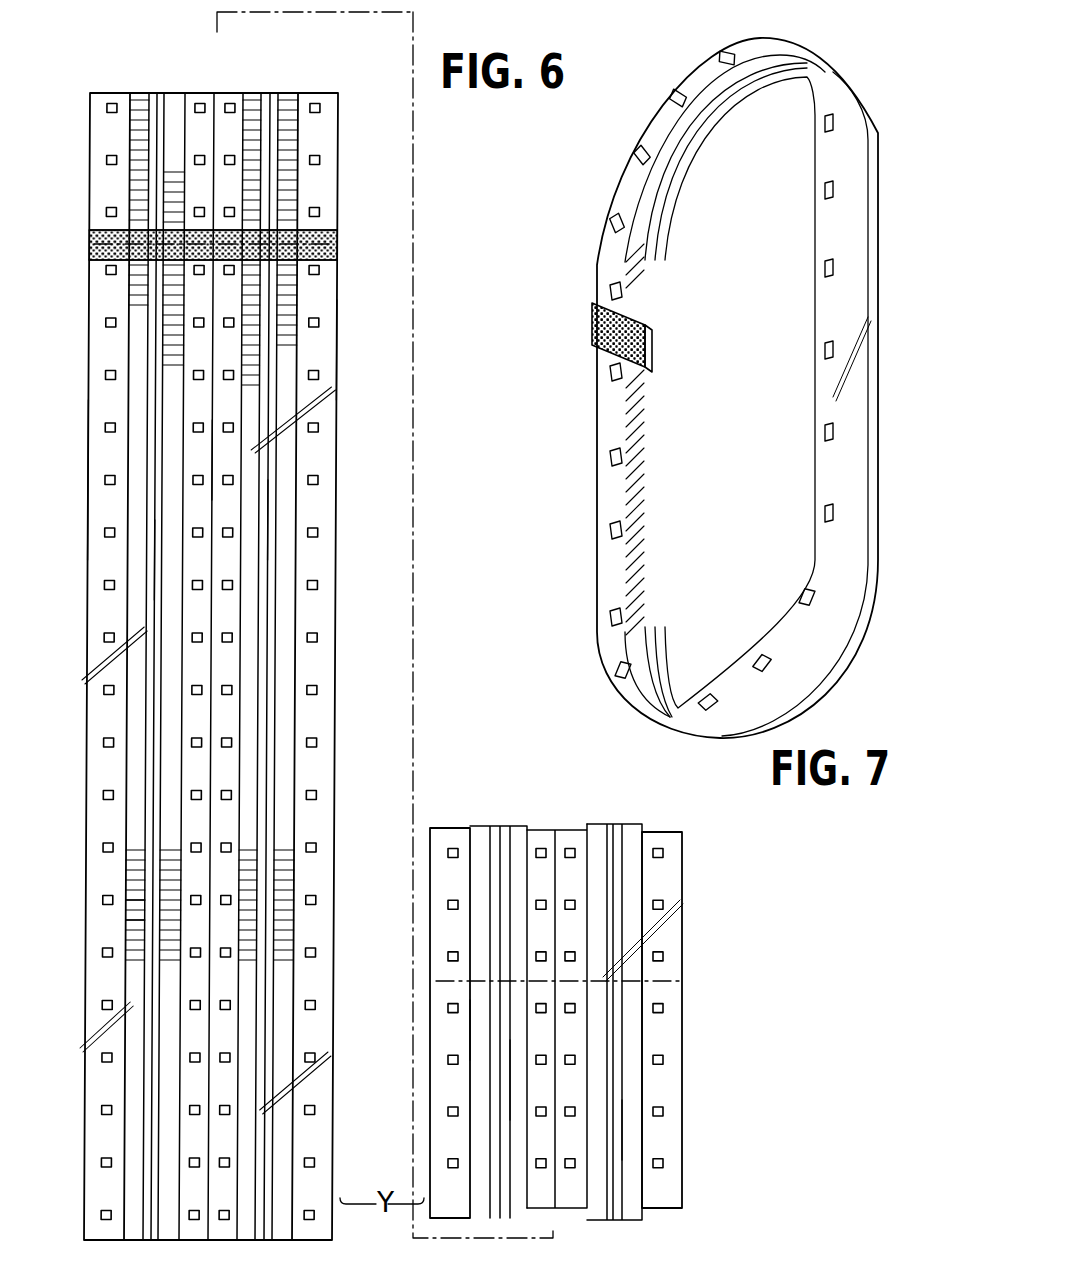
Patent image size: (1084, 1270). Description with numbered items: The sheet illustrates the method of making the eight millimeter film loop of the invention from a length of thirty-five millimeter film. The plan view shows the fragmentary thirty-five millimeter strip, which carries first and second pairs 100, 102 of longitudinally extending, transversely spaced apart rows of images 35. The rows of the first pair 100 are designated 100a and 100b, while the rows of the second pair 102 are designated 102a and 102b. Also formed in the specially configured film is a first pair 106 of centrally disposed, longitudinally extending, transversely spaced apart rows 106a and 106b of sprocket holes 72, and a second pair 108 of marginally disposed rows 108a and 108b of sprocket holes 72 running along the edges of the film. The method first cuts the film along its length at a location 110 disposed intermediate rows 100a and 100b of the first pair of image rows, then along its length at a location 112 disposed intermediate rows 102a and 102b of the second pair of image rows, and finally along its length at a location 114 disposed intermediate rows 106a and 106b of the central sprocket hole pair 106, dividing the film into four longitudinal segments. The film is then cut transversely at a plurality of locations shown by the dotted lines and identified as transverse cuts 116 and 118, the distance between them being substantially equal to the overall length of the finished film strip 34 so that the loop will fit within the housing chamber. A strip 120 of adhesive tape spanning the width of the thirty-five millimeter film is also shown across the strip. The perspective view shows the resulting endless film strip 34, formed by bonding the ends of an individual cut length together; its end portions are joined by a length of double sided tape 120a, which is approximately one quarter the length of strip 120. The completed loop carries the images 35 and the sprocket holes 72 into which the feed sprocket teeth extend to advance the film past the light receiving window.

In FIG. 6, the film strip 34 is at (341, 625).
In FIG. 7, the film strip 34 is at (675, 68).
In FIG. 6, the images 35 is at (134, 930).
In FIG. 7, the images 35 is at (645, 297).
In FIG. 6, the sprocket holes 72 is at (316, 742).
In FIG. 7, the sprocket holes 72 is at (815, 347).
In FIG. 6, the first pair of rows of images 100 is at (186, 82).
In FIG. 6, the row of images 100a is at (137, 140).
In FIG. 6, the row of images 100b is at (170, 183).
In FIG. 6, the second pair of rows of images 102 is at (298, 82).
In FIG. 6, the row of images 102a is at (258, 148).
In FIG. 6, the row of images 102b is at (290, 189).
In FIG. 6, the first pair of rows of sprocket holes 106 is at (243, 82).
In FIG. 6, the row of sprocket holes 106a is at (197, 300).
In FIG. 6, the row of sprocket holes 106b is at (228, 348).
In FIG. 6, the second pair of rows of sprocket holes 108 is at (104, 88).
In FIG. 6, the row of sprocket holes 108a is at (107, 450).
In FIG. 6, the row of sprocket holes 108b is at (310, 352).
In FIG. 6, the cutting location 110 is at (154, 562).
In FIG. 6, the cutting location 112 is at (269, 515).
In FIG. 6, the cutting location 114 is at (215, 460).
In FIG. 6, the transverse cut 116 is at (108, 243).
In FIG. 6, the transverse cut 118 is at (663, 980).
In FIG. 6, the strip of adhesive tape 120 is at (335, 248).
In FIG. 7, the double sided tape 120a is at (600, 325).